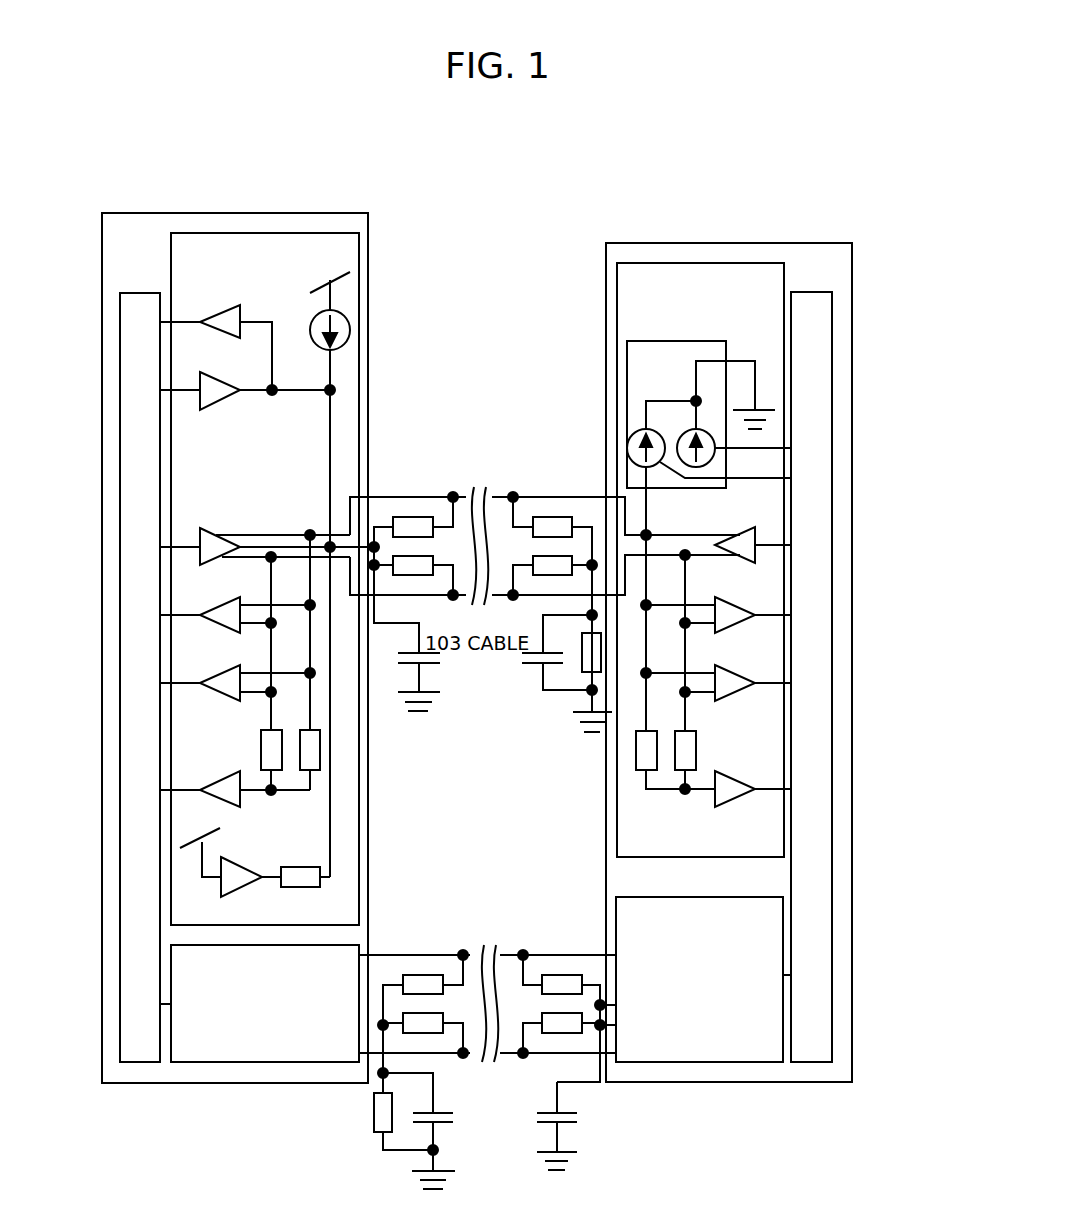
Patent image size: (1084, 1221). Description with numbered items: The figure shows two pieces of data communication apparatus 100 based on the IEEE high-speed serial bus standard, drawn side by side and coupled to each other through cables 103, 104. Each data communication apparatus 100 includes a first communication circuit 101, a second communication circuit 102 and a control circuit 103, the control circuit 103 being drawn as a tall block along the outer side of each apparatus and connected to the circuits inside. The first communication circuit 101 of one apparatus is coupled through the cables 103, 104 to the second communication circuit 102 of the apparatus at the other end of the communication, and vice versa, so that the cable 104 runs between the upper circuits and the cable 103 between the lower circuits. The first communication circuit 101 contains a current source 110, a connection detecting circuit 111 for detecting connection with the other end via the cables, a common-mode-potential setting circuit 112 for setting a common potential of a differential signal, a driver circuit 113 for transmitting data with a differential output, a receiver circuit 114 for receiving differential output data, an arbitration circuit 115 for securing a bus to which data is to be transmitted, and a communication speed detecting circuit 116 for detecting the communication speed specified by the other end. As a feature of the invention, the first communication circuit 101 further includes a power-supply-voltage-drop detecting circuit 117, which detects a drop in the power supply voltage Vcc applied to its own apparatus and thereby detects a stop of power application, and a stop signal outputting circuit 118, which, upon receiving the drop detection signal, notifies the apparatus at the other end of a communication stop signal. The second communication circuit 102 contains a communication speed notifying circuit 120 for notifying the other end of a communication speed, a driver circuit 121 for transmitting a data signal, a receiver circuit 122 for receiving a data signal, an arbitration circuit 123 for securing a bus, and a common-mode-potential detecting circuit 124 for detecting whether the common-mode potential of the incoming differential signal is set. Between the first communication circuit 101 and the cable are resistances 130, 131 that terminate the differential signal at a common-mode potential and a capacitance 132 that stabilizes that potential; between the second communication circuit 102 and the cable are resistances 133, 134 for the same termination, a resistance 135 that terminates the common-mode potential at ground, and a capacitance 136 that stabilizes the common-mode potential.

The data communication apparatus 100 is at (372, 229).
The first communication circuit 101 is at (368, 272).
The second communication circuit 102 is at (312, 1095).
The control circuit 103 is at (138, 1065).
The cable 104 is at (493, 496).
The current source 110 is at (313, 318).
The connection detecting circuit 111 is at (236, 310).
The common-mode-potential setting circuit 112 is at (221, 404).
The driver circuit 113 is at (223, 528).
The receiver circuit 114 is at (228, 625).
The arbitration circuit 115 is at (228, 700).
The communication speed detecting circuit 116 is at (238, 800).
The power-supply-voltage-drop detecting circuit 117 is at (235, 890).
The stop signal outputting circuit 118 is at (322, 882).
The communication speed notifying circuit 120 is at (668, 340).
The driver circuit 121 is at (736, 535).
The receiver circuit 122 is at (728, 618).
The arbitration circuit 123 is at (726, 692).
The common-mode-potential detecting circuit 124 is at (727, 792).
The resistance 130 is at (407, 516).
The resistance 131 is at (410, 576).
The capacitance 132 is at (439, 663).
The resistance 133 is at (546, 516).
The resistance 134 is at (546, 576).
The resistance 135 is at (581, 662).
The capacitance 136 is at (523, 658).